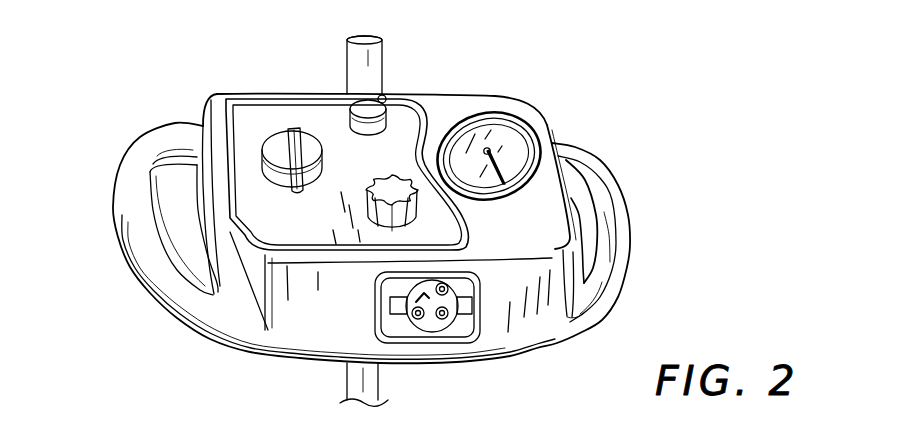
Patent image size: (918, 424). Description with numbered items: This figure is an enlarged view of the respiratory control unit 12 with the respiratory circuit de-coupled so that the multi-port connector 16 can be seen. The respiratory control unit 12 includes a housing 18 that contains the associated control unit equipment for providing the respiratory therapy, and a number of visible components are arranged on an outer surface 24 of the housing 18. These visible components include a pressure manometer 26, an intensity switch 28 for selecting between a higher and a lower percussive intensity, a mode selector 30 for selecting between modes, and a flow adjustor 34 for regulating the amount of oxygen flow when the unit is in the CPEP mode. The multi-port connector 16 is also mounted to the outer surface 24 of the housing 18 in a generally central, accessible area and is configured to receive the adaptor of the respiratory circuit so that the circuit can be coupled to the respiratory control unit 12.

The respiratory control unit 12 is at (539, 98).
The multi-port connector 16 is at (482, 307).
The housing 18 is at (546, 201).
The outer surface 24 is at (553, 237).
The pressure manometer 26 is at (512, 123).
The intensity switch 28 is at (387, 88).
The mode selector 30 is at (270, 130).
The flow adjustor 34 is at (393, 168).